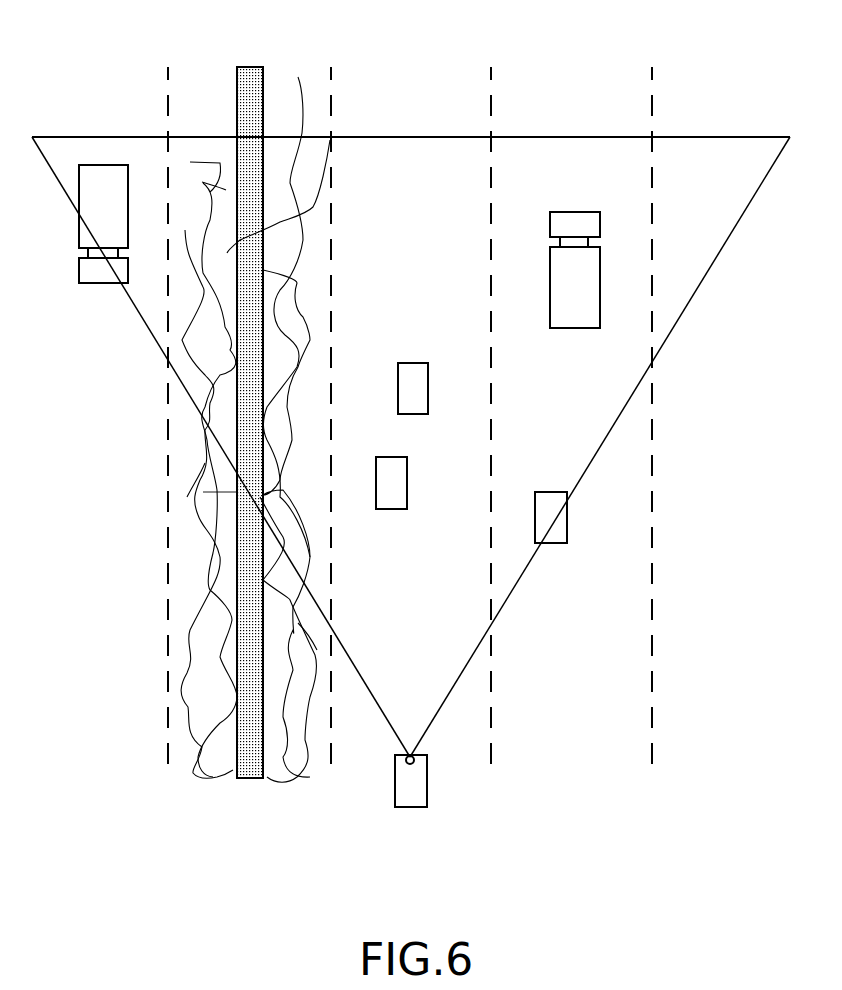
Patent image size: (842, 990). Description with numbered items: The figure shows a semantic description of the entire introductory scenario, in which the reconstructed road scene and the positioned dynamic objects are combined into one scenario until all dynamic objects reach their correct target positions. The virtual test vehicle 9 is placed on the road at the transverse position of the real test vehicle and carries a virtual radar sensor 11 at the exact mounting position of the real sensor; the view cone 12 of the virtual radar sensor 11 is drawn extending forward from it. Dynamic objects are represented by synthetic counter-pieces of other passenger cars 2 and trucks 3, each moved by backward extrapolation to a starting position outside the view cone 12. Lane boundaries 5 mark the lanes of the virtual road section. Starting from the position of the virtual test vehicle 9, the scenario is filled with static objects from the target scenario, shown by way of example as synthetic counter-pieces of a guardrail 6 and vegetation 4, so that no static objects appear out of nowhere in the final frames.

The passenger cars 2 is at (415, 412).
The trucks 3 is at (91, 273).
The vegetation 4 is at (198, 512).
The lane boundaries 5 is at (168, 737).
The guardrail 6 is at (246, 67).
The virtual test vehicle 9 is at (412, 797).
The virtual radar sensor 11 is at (414, 763).
The view cone 12 is at (712, 140).